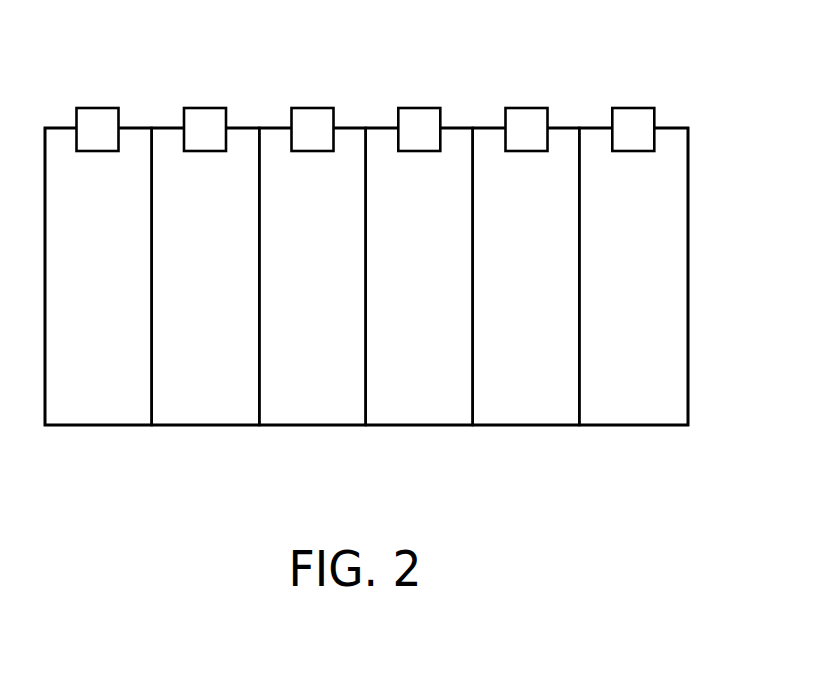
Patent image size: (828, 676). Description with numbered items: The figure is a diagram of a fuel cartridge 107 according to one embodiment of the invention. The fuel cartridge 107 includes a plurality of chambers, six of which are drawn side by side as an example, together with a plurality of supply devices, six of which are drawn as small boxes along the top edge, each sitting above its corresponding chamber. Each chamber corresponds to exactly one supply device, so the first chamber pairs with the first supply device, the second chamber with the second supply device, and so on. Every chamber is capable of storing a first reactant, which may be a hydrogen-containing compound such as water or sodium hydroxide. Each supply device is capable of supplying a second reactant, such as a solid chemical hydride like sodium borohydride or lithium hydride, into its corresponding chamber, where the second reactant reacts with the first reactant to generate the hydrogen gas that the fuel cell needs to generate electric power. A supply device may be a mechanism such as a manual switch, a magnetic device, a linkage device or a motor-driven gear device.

The fuel cartridge 107 is at (719, 508).